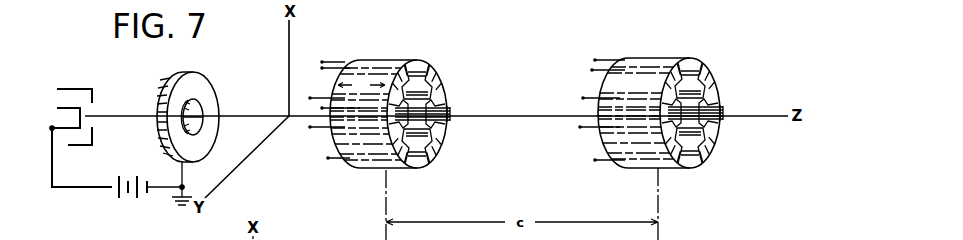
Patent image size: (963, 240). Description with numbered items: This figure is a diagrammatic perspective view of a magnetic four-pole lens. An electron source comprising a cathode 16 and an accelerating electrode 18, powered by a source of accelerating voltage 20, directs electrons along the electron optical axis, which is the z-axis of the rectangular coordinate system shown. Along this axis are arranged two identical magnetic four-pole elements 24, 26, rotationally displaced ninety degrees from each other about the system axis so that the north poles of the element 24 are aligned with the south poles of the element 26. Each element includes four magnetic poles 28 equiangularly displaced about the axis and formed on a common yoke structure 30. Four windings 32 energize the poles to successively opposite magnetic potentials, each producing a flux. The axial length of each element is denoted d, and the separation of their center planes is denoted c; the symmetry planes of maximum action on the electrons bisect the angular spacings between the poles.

The cathode 16 is at (70, 104).
The accelerating electrode 18 is at (205, 95).
The source of accelerating voltage 20 is at (128, 199).
The magnetic four-pole element 24 is at (393, 56).
The magnetic four-pole element 26 is at (651, 57).
The magnetic poles 28 is at (428, 101).
The yoke structure 30 is at (421, 153).
The windings 32 is at (358, 123).